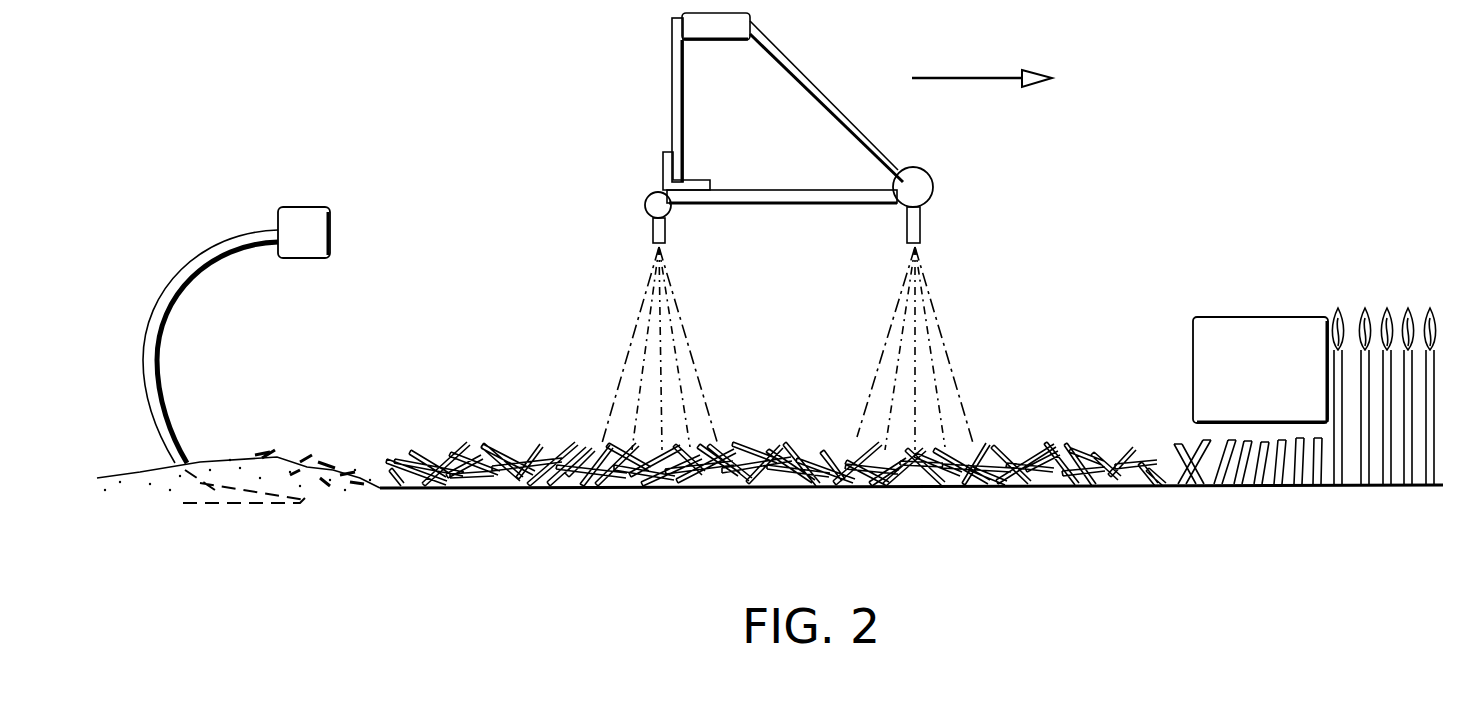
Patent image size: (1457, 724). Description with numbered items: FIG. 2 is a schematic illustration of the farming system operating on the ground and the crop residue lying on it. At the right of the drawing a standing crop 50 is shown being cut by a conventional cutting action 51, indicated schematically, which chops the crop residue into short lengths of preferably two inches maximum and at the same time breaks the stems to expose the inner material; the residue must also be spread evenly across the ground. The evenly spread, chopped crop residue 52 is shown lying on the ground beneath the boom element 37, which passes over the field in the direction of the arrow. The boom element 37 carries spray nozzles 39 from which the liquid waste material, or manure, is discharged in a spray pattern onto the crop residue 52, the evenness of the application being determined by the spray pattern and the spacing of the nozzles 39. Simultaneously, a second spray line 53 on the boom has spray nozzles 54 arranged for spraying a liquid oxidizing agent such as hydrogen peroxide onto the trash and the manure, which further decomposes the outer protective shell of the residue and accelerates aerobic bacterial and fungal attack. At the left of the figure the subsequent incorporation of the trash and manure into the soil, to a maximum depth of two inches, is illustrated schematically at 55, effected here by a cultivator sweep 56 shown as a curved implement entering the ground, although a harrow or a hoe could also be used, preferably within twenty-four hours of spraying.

The boom element 37 is at (656, 90).
The spray nozzles 39 is at (652, 229).
The standing crop 50 is at (1387, 290).
The cutting station 51 is at (1246, 308).
The pile of cut crop 52 is at (1079, 416).
The second spray line 53 is at (926, 178).
The spray nozzles 54 is at (921, 229).
The incorporation 55 is at (274, 444).
The cultivator sweep 56 is at (175, 359).